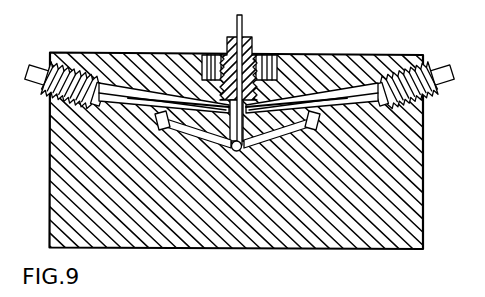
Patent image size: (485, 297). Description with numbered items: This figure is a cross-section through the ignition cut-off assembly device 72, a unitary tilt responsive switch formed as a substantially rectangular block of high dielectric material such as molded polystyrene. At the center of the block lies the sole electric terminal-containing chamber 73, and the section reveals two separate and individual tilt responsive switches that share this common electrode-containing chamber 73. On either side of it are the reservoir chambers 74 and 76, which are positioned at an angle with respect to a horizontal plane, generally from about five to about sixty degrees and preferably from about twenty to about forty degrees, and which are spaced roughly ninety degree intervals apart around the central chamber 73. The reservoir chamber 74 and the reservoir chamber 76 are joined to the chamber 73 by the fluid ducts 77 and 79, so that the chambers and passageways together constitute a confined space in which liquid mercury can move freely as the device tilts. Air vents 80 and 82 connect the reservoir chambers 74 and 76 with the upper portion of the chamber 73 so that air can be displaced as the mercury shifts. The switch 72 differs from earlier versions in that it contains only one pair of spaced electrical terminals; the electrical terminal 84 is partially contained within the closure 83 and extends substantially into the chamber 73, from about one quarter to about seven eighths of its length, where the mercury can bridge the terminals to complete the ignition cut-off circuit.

The ignition cut-off assembly device 72 is at (400, 54).
The electric terminal-containing chamber 73 is at (236, 152).
The reservoir chamber 74 is at (108, 104).
The reservoir chamber 76 is at (385, 102).
The fluid duct 77 is at (204, 150).
The fluid duct 79 is at (284, 150).
The air vent 80 is at (168, 152).
The air vent 82 is at (312, 98).
The closure 83 is at (253, 48).
The electrical terminal 84 is at (243, 26).